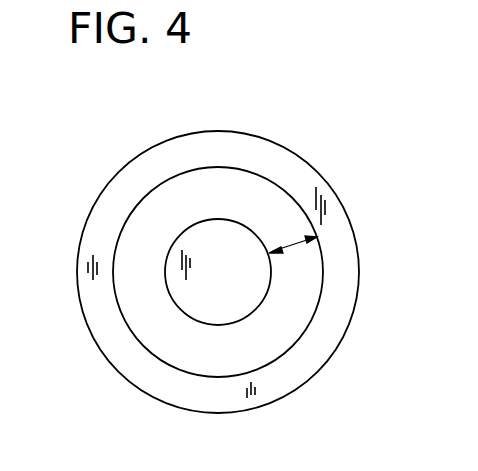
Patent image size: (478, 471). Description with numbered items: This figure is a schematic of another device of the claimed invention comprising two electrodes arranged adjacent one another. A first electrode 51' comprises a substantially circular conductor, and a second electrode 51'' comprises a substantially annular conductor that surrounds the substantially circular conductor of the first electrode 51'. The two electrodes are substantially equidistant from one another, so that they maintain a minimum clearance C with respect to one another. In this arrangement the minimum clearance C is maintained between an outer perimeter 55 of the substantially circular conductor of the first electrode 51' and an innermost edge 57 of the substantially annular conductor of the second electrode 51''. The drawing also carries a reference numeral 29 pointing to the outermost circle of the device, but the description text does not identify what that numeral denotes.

The sealing element / ring 29 is at (100, 182).
The innermost edge 57 is at (113, 278).
The outer perimeter 55 is at (271, 285).
The first electrode 51' is at (218, 271).
The second electrode 51'' is at (216, 148).
The minimum clearance C is at (293, 253).